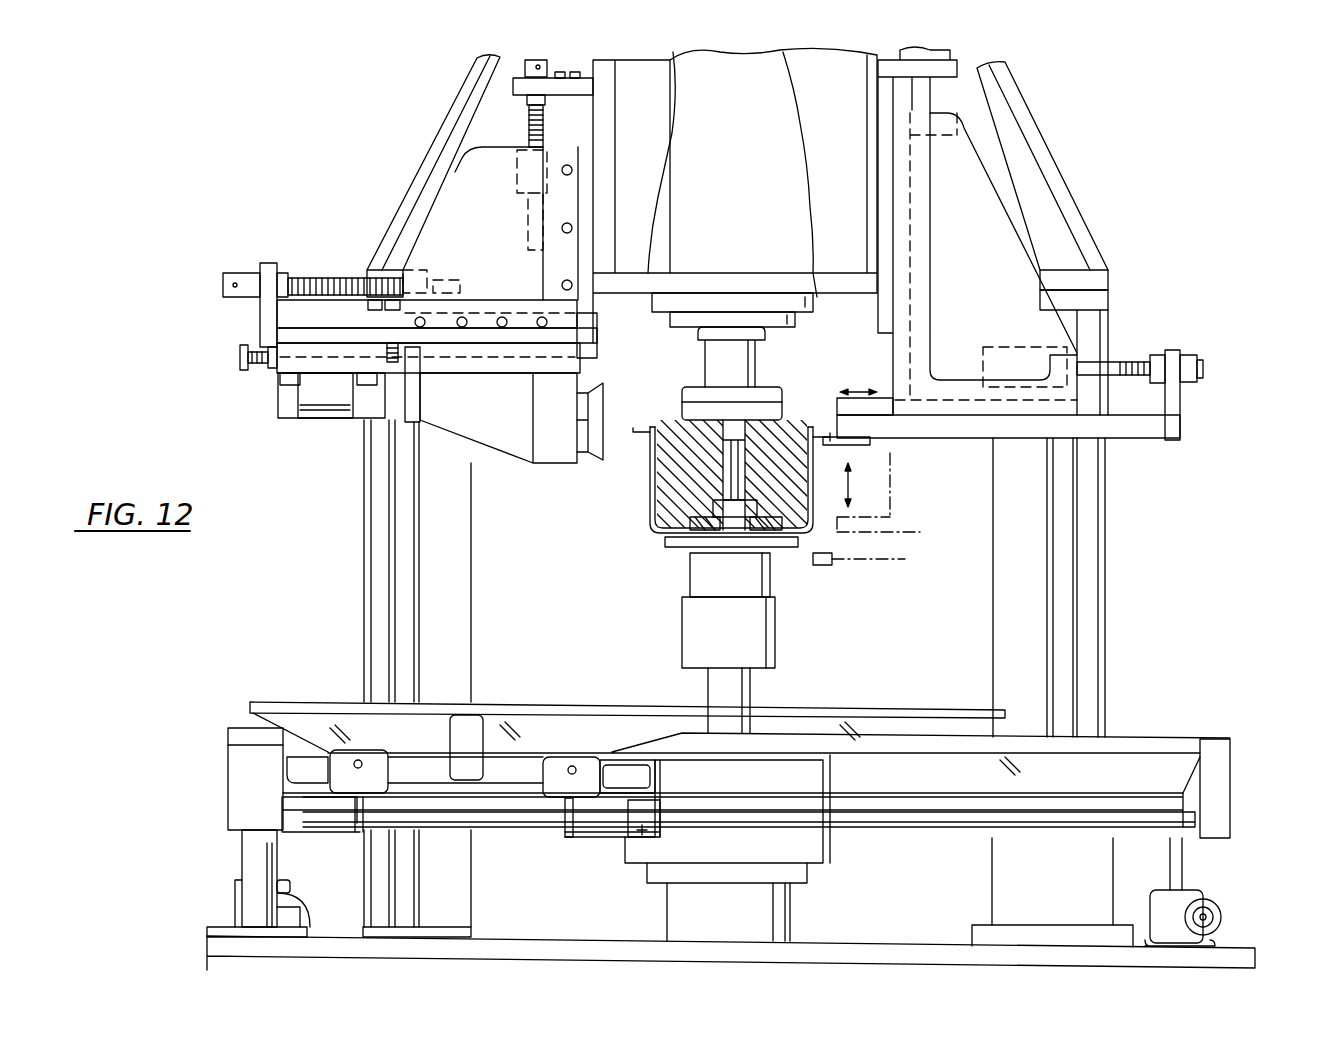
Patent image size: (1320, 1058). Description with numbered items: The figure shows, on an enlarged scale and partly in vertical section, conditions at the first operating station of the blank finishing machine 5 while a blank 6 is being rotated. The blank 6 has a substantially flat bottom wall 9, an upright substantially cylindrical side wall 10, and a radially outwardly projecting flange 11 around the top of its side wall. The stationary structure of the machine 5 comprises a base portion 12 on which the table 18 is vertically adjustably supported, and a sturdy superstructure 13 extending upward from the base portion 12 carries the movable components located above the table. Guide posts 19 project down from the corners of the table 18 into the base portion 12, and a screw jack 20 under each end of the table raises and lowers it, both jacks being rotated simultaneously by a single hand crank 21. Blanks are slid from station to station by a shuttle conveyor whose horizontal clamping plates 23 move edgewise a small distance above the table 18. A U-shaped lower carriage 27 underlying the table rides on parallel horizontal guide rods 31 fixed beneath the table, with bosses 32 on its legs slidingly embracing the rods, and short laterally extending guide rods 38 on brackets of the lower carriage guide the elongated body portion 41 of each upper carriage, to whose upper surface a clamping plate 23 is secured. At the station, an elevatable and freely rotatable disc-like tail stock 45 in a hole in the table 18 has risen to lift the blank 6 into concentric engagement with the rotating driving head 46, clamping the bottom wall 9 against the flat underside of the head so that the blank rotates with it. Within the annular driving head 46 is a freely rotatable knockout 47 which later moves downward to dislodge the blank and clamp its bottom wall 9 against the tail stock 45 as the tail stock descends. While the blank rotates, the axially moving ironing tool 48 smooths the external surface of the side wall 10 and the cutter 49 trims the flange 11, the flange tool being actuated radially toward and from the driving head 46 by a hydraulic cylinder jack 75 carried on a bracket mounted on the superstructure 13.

The blank finishing machine 5 is at (1200, 497).
The blank 6 is at (650, 472).
The bottom wall 9 is at (677, 550).
The side wall 10 is at (650, 493).
The flange 11 is at (643, 427).
The base portion 12 is at (207, 945).
The superstructure 13 is at (1043, 135).
The table 18 is at (1175, 738).
The guide posts 19 is at (247, 850).
The screw jack 20 is at (1180, 867).
The hand crank 21 is at (1223, 917).
The clamping plates 23 is at (893, 708).
The lower carriage 27 is at (660, 785).
The guide rods 31 is at (1157, 823).
The bosses 32 is at (642, 828).
The guide rod 38 is at (360, 763).
The body portion 41 is at (562, 737).
The tail stock 45 is at (790, 543).
The driving head 46 is at (790, 390).
The knockout 47 is at (690, 527).
The ironing tool 48 is at (833, 445).
The cutter 49 is at (600, 392).
The hydraulic cylinder jack 75 is at (323, 408).